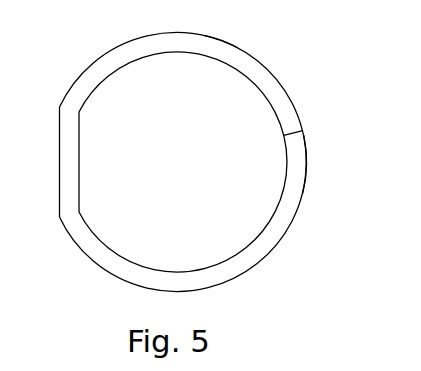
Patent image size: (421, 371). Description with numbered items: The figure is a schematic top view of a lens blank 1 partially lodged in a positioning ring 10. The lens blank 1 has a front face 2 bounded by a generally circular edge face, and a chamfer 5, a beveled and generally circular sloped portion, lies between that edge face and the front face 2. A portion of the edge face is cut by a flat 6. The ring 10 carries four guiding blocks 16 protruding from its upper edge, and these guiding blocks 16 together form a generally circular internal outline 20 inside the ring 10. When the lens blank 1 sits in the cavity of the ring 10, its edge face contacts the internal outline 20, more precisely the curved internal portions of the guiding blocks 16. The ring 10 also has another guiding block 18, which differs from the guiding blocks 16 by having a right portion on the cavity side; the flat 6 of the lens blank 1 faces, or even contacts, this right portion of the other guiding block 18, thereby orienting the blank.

The lens blank 1 is at (133, 242).
The front face 2 is at (129, 80).
The chamfer 5 is at (213, 58).
The flat 6 is at (82, 147).
The positioning ring 10 is at (284, 240).
The guiding blocks 16 is at (297, 157).
The other guiding block 18 is at (72, 163).
The internal outline 20 is at (300, 132).